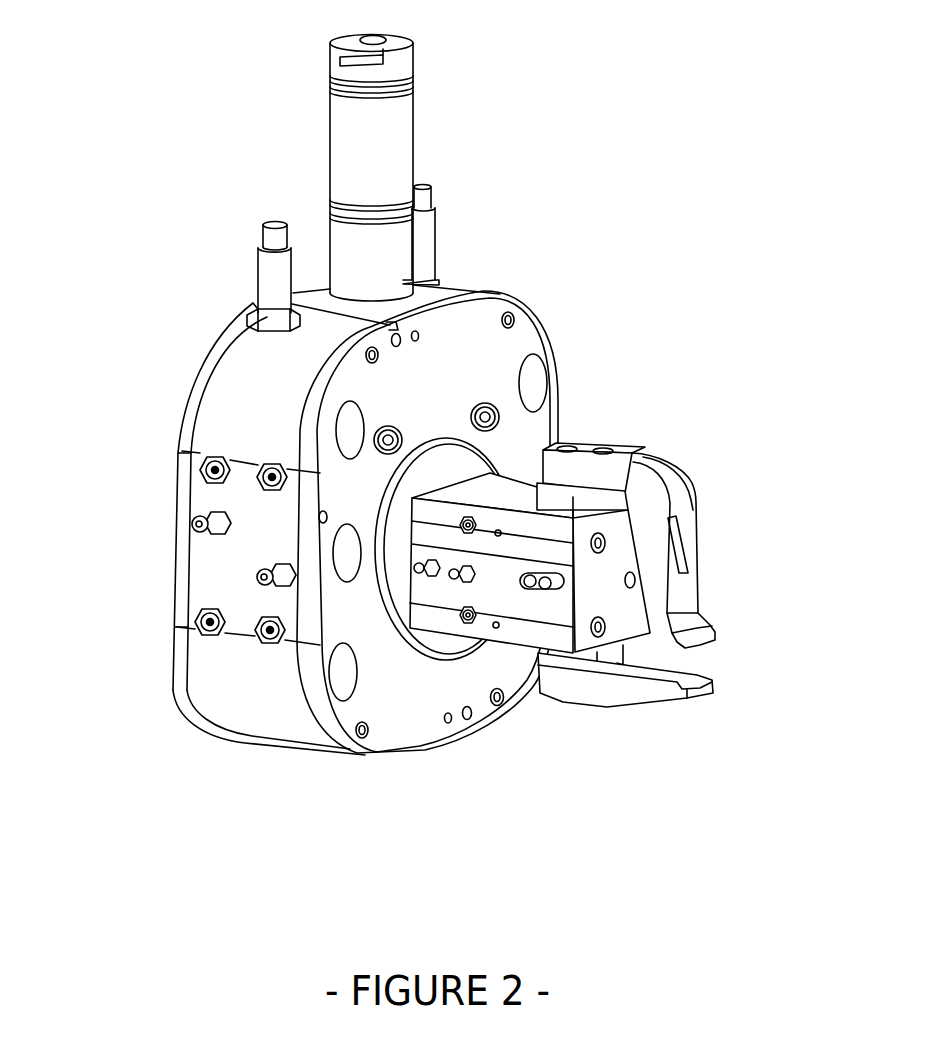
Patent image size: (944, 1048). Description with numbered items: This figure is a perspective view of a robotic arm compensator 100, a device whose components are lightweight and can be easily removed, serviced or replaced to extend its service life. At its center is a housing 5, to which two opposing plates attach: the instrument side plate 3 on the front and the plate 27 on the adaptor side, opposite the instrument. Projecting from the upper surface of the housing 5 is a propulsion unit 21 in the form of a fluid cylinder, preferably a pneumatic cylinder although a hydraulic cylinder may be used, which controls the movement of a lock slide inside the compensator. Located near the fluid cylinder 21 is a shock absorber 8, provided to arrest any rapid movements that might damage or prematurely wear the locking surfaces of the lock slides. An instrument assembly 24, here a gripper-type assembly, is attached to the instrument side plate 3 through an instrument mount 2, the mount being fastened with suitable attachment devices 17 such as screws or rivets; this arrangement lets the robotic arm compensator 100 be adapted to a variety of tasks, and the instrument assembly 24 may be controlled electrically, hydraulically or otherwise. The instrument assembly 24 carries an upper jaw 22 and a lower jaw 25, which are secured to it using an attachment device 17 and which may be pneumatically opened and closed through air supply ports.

The robotic arm compensator 100 is at (723, 188).
The propulsion unit 21 is at (398, 127).
The shock absorber 8 is at (268, 265).
The instrument side plate 3 is at (465, 338).
The housing 5 is at (240, 400).
The instrument mount 2 is at (522, 477).
The attachment device 17 is at (603, 447).
The upper jaw 22 is at (652, 499).
The plate 27 is at (176, 510).
The instrument assembly 24 is at (500, 580).
The lower jaw 25 is at (632, 694).